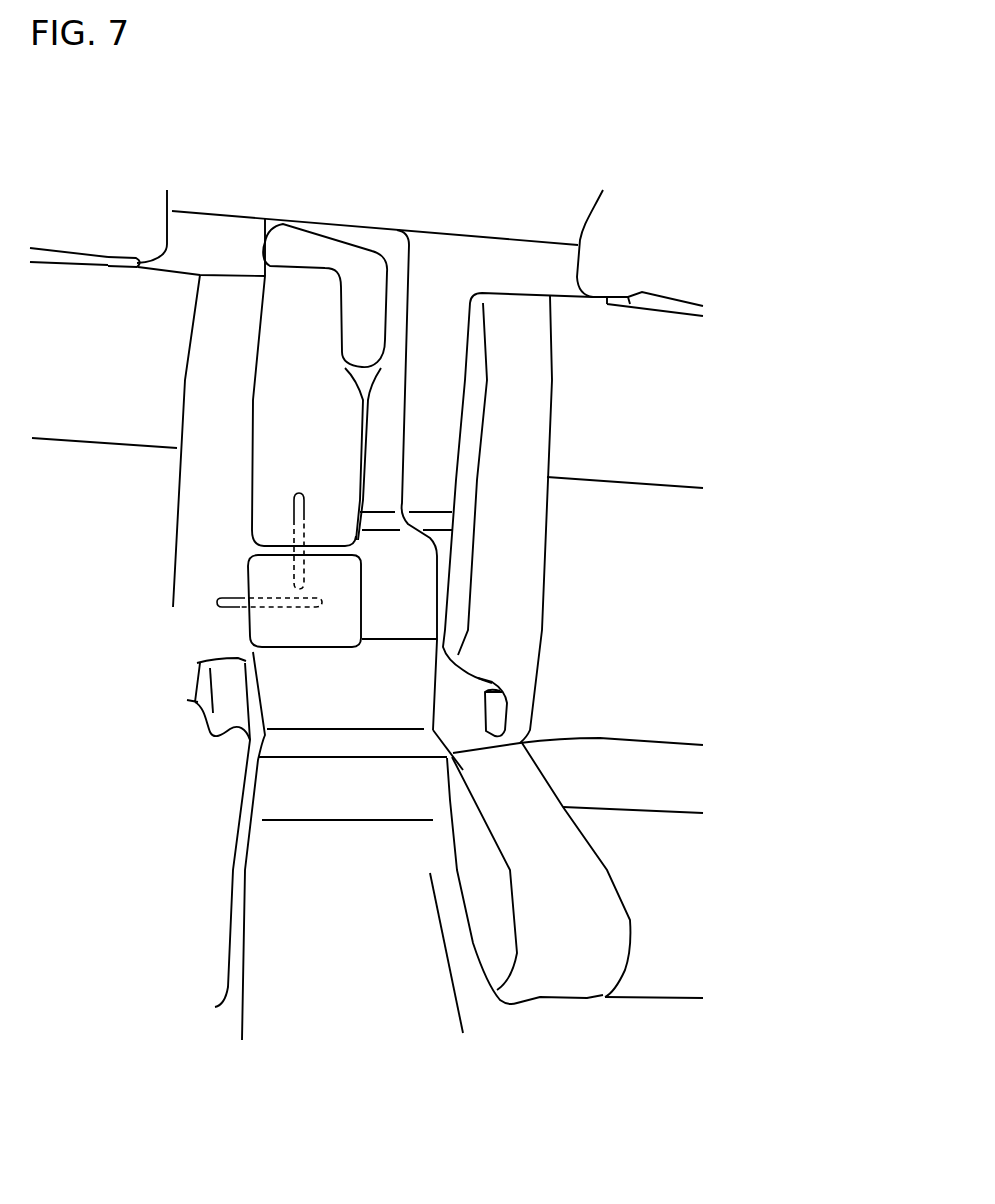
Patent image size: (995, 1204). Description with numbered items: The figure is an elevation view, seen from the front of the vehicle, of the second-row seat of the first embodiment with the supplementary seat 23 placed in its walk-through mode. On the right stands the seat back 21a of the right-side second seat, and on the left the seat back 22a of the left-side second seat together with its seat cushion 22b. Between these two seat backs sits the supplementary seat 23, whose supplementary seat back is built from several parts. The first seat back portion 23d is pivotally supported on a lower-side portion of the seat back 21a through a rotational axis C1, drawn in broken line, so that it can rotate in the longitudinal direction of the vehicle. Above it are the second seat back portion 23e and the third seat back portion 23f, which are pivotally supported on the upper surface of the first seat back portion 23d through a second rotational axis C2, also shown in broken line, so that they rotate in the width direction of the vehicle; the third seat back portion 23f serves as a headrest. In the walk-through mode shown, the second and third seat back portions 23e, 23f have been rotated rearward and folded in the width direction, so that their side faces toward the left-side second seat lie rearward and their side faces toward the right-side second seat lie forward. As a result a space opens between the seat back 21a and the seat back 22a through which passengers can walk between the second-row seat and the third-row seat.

The seat back 21a is at (72, 305).
The seat back 22a is at (595, 370).
The seat cushion 22b is at (582, 923).
The supplementary seat 23 is at (390, 242).
The first seat back portion 23d is at (325, 653).
The second seat back portion 23e is at (298, 360).
The third seat back portion 23f is at (298, 247).
The rotational axis C1 is at (220, 607).
The rotational axis C2 is at (292, 515).